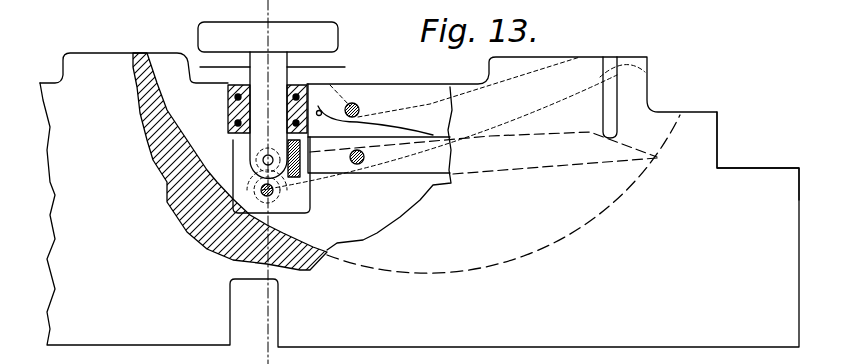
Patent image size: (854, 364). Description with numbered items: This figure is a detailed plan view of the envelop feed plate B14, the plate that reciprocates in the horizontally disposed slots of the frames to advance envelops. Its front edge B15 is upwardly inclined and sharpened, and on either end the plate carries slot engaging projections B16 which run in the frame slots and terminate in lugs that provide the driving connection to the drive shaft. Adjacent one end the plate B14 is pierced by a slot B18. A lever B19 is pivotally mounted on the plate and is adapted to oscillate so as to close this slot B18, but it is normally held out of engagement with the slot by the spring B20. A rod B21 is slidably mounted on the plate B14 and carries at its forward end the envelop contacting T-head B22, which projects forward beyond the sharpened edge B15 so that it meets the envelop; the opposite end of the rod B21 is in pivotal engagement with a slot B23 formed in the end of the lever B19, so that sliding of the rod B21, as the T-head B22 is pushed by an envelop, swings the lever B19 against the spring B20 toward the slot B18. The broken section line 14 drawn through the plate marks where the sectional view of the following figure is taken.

The envelop feed plate B14 is at (213, 175).
The sharpened front edge B15 is at (97, 58).
The slot engaging projections B16 is at (760, 175).
The slot B18 is at (617, 101).
The lever B19 is at (410, 168).
The spring B20 is at (360, 86).
The rod B21 is at (345, 67).
The envelop contacting T-head B22 is at (328, 33).
The slot B23 is at (250, 152).
The section line 14 is at (265, 357).